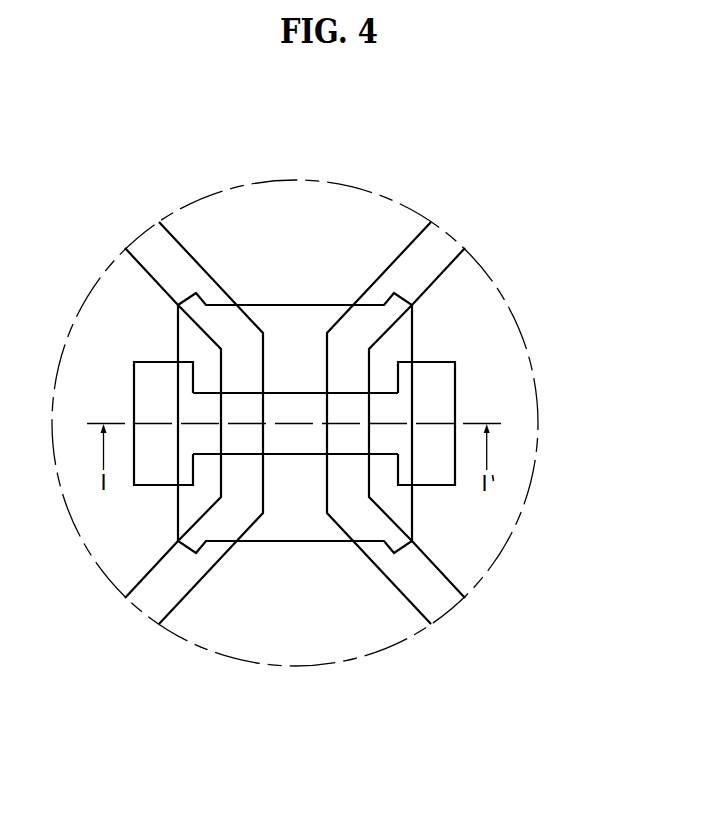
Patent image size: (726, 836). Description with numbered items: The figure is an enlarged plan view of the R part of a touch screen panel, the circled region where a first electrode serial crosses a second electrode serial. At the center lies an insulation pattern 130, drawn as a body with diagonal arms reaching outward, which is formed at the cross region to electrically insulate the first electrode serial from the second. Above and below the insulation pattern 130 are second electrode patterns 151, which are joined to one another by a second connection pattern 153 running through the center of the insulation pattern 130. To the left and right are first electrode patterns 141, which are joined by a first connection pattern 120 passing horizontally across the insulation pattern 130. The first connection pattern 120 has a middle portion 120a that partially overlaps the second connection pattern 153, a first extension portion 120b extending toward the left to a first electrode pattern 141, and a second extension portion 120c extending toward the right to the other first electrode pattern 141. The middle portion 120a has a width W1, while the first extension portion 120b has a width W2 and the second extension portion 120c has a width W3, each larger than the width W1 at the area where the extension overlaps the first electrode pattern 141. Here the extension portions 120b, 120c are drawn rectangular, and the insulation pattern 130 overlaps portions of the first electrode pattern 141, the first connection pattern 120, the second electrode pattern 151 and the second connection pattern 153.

The first connection pattern 120 is at (294, 566).
The middle portion 120a is at (307, 437).
The first extension portion 120b is at (152, 476).
The second extension portion 120c is at (435, 475).
The insulation pattern 130 is at (368, 320).
The first electrode pattern 141 is at (103, 538).
The second electrode pattern 151 is at (272, 262).
The second connection pattern 153 is at (300, 353).
The R part R is at (193, 192).
The width of the middle portion W1 is at (287, 445).
The width of the first extension portion W2 is at (148, 476).
The width of the second extension portion W3 is at (443, 476).